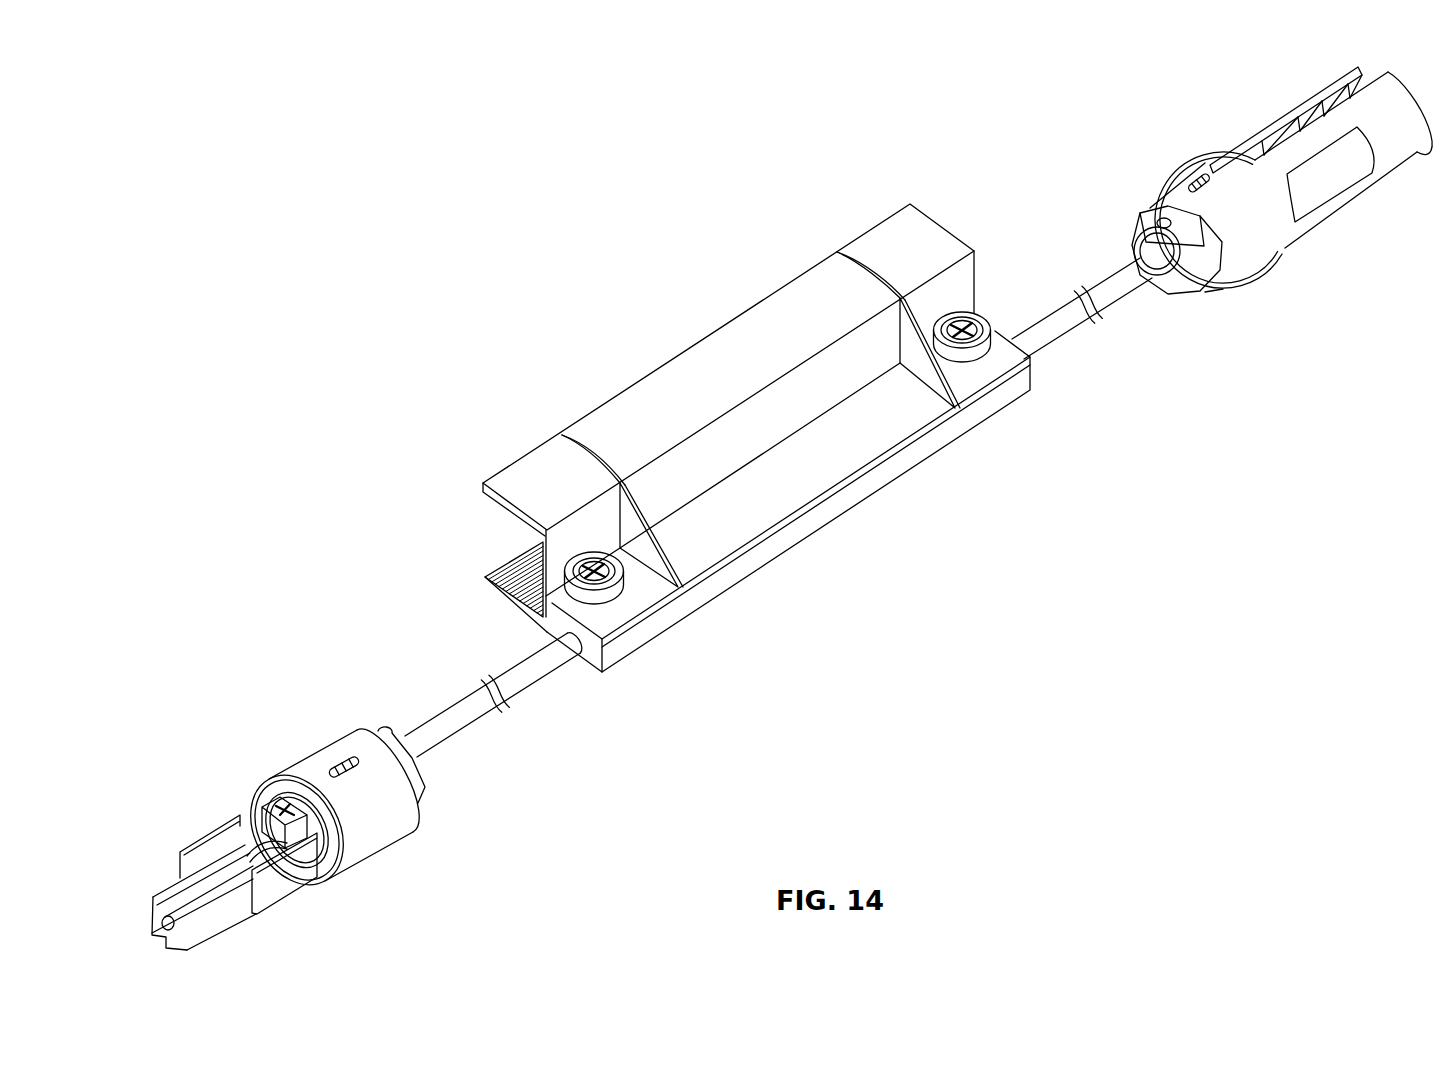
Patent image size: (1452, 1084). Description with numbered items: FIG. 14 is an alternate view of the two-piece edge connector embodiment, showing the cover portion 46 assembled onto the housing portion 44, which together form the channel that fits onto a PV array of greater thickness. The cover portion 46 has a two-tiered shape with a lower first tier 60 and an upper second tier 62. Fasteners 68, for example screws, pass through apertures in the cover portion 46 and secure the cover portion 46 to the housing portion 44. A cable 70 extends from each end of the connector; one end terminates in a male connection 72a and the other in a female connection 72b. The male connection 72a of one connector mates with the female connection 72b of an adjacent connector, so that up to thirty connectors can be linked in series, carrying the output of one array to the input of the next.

The housing portion 44 is at (530, 524).
The cover portion 46 is at (702, 361).
The first tier 60 is at (850, 460).
The second tier 62 is at (898, 234).
The fasteners 68 is at (977, 357).
The cable 70 is at (1103, 290).
The male connection 72a is at (1297, 112).
The female connection 72b is at (385, 832).